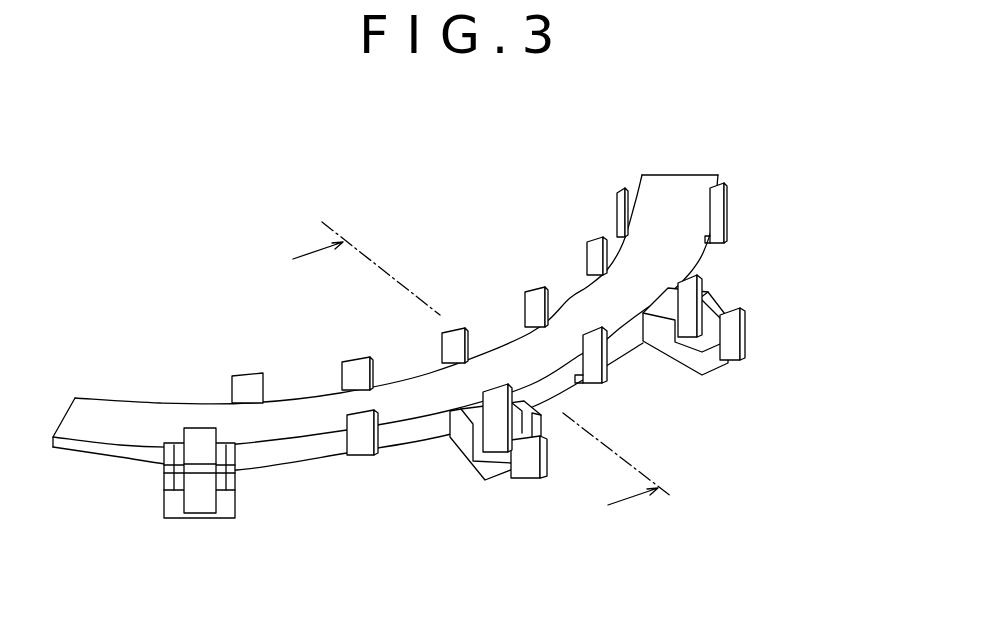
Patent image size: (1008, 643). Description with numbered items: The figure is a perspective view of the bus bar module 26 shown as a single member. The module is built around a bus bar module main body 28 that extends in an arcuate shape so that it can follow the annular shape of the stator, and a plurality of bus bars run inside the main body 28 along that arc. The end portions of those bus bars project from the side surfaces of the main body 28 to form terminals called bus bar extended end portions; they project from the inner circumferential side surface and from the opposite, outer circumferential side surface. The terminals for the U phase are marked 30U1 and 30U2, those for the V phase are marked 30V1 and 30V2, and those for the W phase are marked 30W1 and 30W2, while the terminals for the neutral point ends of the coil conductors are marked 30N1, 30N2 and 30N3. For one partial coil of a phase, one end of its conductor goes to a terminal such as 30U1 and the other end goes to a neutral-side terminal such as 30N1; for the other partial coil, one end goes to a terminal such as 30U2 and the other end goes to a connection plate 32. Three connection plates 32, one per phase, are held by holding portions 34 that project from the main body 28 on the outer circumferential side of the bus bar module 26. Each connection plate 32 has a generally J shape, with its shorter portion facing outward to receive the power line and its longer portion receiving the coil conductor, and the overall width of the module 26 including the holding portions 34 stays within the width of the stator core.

The bus bar module 26 is at (213, 197).
The bus bar module main body 28 is at (170, 412).
The bus bar extended end portion for U phase 30U1 is at (248, 373).
The bus bar extended end portion for V phase 30V1 is at (357, 357).
The bus bar extended end portion for W phase 30W1 is at (455, 328).
The bus bar extended end portion for U phase 30U2 is at (535, 287).
The bus bar extended end portion for V phase 30V2 is at (593, 240).
The bus bar extended end portion for W phase 30W2 is at (622, 190).
The bus bar extended end portion on neutral point side 30N1 is at (360, 438).
The bus bar extended end portion on neutral point side 30N2 is at (598, 357).
The bus bar extended end portion on neutral point side 30N3 is at (727, 213).
The connection plate 32 is at (200, 495).
The holding portion 34 is at (457, 438).